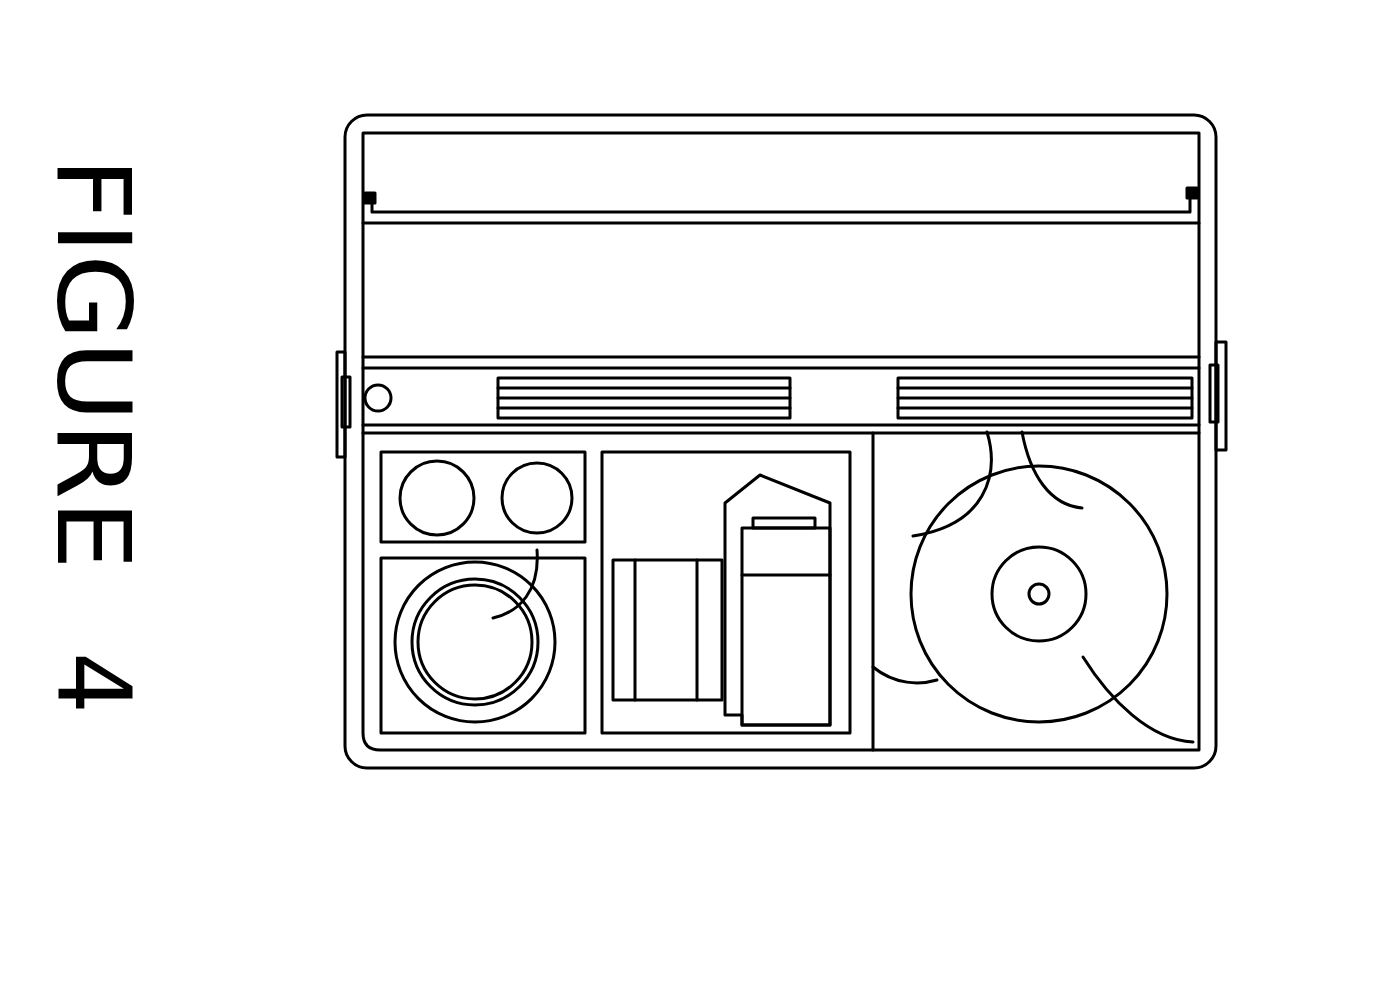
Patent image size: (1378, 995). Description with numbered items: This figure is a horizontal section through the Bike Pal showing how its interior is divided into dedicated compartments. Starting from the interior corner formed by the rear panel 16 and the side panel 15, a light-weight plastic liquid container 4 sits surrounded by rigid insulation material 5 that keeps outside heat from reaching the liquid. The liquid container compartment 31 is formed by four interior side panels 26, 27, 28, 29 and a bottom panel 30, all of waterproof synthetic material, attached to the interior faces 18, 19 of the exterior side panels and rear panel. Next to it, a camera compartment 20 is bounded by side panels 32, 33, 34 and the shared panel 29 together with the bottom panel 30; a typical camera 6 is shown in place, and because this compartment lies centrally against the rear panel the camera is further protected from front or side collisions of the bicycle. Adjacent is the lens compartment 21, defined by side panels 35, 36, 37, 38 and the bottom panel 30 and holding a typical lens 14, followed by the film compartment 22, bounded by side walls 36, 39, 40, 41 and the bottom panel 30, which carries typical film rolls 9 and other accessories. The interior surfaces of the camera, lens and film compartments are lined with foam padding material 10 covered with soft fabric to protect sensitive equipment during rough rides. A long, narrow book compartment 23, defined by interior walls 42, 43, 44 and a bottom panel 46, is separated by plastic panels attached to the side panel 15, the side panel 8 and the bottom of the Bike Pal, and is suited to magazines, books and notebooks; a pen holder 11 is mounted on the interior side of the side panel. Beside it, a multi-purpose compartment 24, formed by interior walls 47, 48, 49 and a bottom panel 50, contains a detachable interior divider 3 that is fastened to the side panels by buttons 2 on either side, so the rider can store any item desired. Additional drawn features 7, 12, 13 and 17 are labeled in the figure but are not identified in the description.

The button 2 is at (1198, 192).
The detachable interior divider 3 is at (982, 215).
The liquid container 4 is at (1207, 748).
The rigid insulation material 5 is at (925, 710).
The camera 6 is at (752, 750).
The center compartment 7 is at (603, 545).
The side panel 8 is at (338, 352).
The film rolls 9 is at (413, 500).
The padding material 10 is at (525, 737).
The pen holder 11 is at (440, 395).
The vent strip 12 is at (782, 365).
The left grille 13 is at (587, 402).
The lens 14 is at (453, 668).
The side panel 15 is at (1215, 520).
The rear panel 16 is at (1117, 757).
The lid compartment 17 is at (411, 257).
The interior face of exterior panel 18 is at (860, 750).
The interior face of exterior panel 19 is at (947, 484).
The camera compartment 20 is at (668, 672).
The lens compartment 21 is at (548, 700).
The film compartment 22 is at (393, 530).
The book compartment 23 is at (887, 380).
The multi-purpose compartment 24 is at (798, 183).
The interior side panel 26 is at (1076, 492).
The interior side panel 27 is at (1197, 445).
The interior side panel 28 is at (1020, 752).
The interior side panel 29 is at (938, 680).
The bottom panel 30 is at (800, 628).
The liquid container compartment 31 is at (1178, 515).
The side panel 32 is at (720, 452).
The side panel 33 is at (615, 623).
The side panel 34 is at (752, 750).
The side panel 35 is at (583, 633).
The side panel 36 is at (475, 642).
The side panel 37 is at (580, 740).
The side panel 38 is at (363, 685).
The side wall 39 is at (537, 498).
The side wall 40 is at (393, 447).
The side wall 41 is at (373, 510).
The interior wall 42 is at (867, 432).
The interior wall 43 is at (388, 405).
The interior wall 44 is at (1315, 400).
The bottom panel 46 is at (833, 419).
The interior wall 47 is at (1198, 318).
The interior wall 48 is at (627, 137).
The interior wall 49 is at (440, 183).
The bottom panel 50 is at (668, 278).